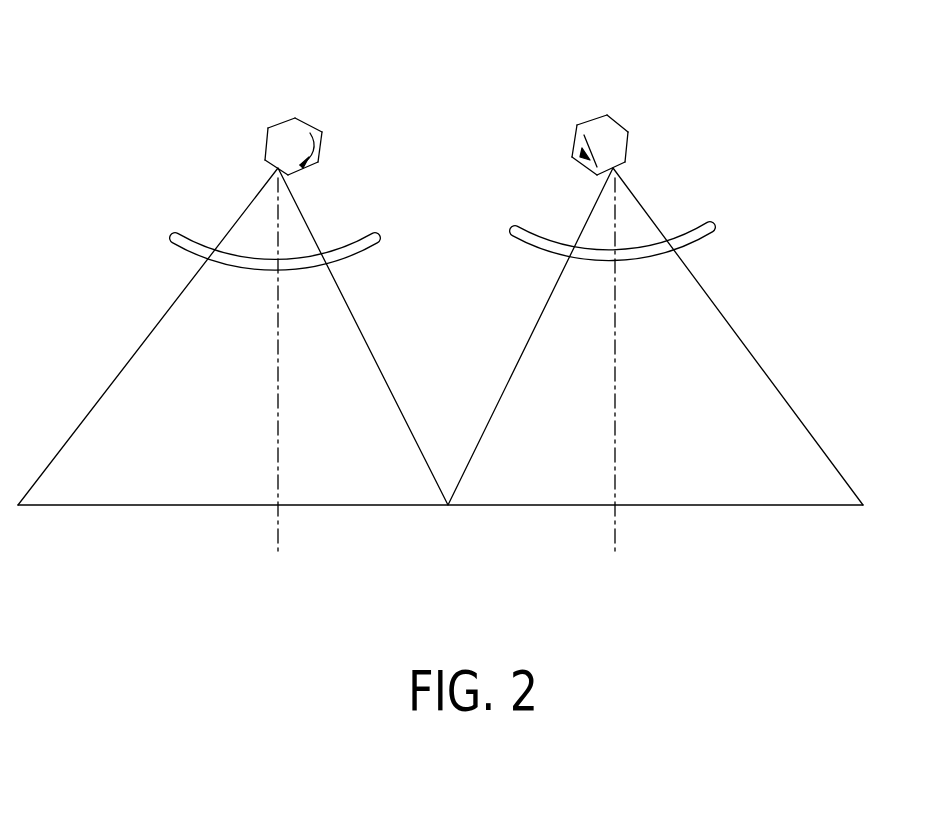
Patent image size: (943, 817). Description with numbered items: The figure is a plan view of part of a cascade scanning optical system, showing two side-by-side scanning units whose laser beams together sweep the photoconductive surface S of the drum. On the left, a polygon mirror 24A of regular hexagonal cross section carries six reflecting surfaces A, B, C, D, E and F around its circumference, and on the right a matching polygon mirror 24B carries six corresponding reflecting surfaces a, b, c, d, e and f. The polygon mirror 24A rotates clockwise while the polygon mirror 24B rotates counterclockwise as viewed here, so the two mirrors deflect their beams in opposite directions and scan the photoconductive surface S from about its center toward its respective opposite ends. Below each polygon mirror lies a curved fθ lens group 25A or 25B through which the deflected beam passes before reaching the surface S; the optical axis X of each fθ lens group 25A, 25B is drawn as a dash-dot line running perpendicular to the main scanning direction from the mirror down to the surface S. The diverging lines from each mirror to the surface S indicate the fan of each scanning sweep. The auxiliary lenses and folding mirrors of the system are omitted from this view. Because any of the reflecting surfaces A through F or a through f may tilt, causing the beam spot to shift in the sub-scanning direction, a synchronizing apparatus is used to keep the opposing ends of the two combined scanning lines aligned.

The polygon mirror 24A is at (284, 121).
The polygon mirror 24B is at (601, 116).
The fθ lens group 25A is at (195, 247).
The fθ lens group 25B is at (702, 230).
The reflecting surface A is at (272, 168).
The reflecting surface B is at (300, 173).
The reflecting surface C is at (322, 140).
The reflecting surface D is at (318, 128).
The reflecting surface E is at (282, 120).
The reflecting surface F is at (265, 145).
The reflecting surface a is at (593, 168).
The reflecting surface b is at (575, 142).
The reflecting surface c is at (587, 122).
The reflecting surface d is at (613, 118).
The reflecting surface e is at (628, 147).
The reflecting surface f is at (627, 167).
The optical axis X is at (279, 432).
The photoconductive surface S is at (62, 505).